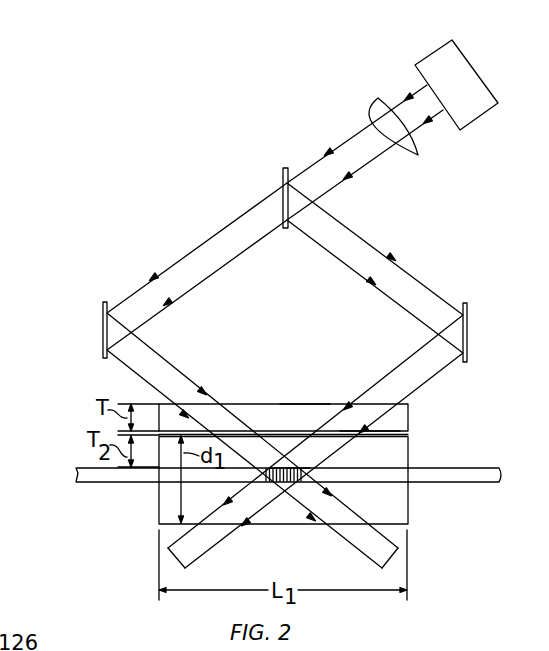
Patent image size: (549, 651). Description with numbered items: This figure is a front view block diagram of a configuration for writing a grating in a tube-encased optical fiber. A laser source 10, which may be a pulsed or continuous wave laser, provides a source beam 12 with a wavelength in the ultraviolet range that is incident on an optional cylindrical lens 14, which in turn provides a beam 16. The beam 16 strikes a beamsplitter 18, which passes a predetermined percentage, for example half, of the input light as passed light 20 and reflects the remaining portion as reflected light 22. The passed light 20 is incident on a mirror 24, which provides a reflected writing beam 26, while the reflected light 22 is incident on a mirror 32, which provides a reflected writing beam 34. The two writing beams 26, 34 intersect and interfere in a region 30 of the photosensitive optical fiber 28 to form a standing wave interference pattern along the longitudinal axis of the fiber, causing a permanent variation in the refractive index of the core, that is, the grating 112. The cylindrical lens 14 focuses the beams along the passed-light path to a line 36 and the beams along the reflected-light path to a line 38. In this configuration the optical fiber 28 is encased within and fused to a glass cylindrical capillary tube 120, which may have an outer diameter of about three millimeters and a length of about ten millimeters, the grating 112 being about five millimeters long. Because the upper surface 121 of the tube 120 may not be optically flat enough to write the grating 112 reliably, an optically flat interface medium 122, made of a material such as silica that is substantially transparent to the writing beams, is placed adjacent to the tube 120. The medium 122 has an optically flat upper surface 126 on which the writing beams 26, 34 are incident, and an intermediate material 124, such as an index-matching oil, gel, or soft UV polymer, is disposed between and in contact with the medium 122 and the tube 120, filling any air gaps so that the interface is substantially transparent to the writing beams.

The laser source 10 is at (486, 87).
The source beam 12 is at (427, 121).
The cylindrical lens 14 is at (411, 158).
The beam 16 is at (354, 172).
The beamsplitter 18 is at (283, 180).
The passed light 20 is at (180, 270).
The reflected light 22 is at (378, 257).
The mirror 24 is at (103, 330).
The reflected writing beam 26 is at (182, 382).
The optical fiber 28 is at (78, 464).
The region 30 is at (283, 486).
The mirror 32 is at (467, 332).
The reflected writing beam 34 is at (422, 358).
The line 36 is at (166, 566).
The line 38 is at (396, 563).
The grating 112 is at (292, 464).
The glass cylindrical capillary tube 120 is at (410, 460).
The upper surface 121 is at (368, 420).
The optically flat interface medium 122 is at (410, 420).
The intermediate material 124 is at (408, 433).
The optically flat upper surface 126 is at (298, 405).